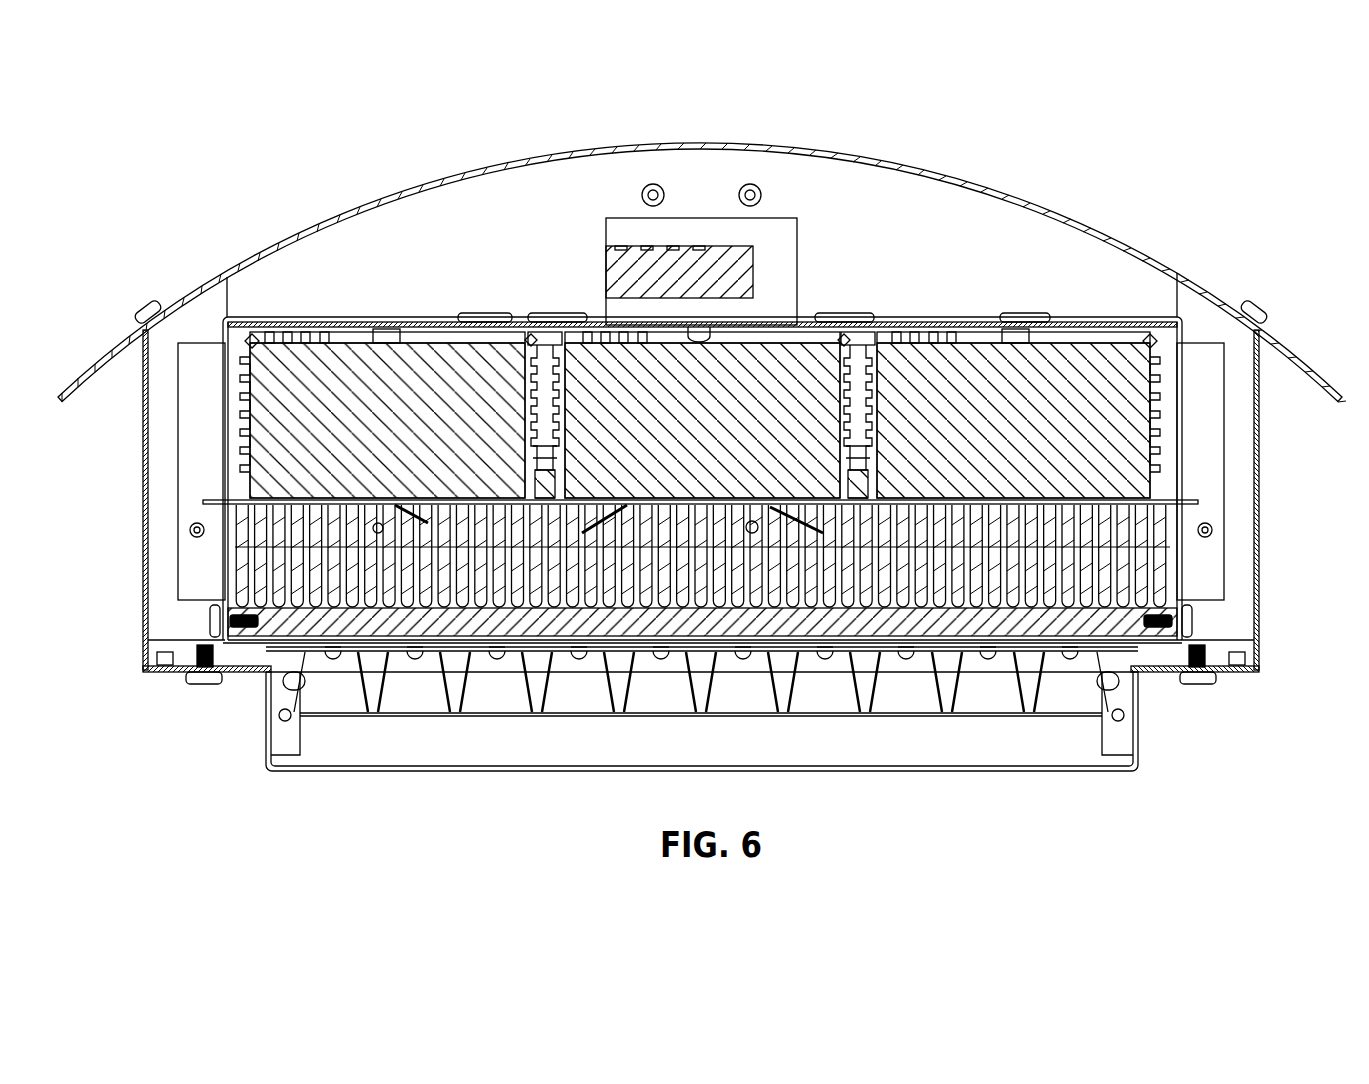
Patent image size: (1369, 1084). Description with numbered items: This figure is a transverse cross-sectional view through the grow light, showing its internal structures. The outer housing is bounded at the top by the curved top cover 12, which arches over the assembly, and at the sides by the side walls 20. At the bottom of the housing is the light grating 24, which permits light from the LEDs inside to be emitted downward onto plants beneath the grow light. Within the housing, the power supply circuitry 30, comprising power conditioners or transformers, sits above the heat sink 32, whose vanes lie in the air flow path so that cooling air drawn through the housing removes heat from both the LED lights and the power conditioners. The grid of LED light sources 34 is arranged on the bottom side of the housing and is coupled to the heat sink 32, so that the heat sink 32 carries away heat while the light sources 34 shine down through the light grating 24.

The curved top cover 12 is at (982, 172).
The side walls 20 is at (135, 521).
The light grating 24 is at (1148, 745).
The power supply circuitry 30 is at (390, 431).
The heat sink 32 is at (420, 778).
The LED light sources 34 is at (824, 658).